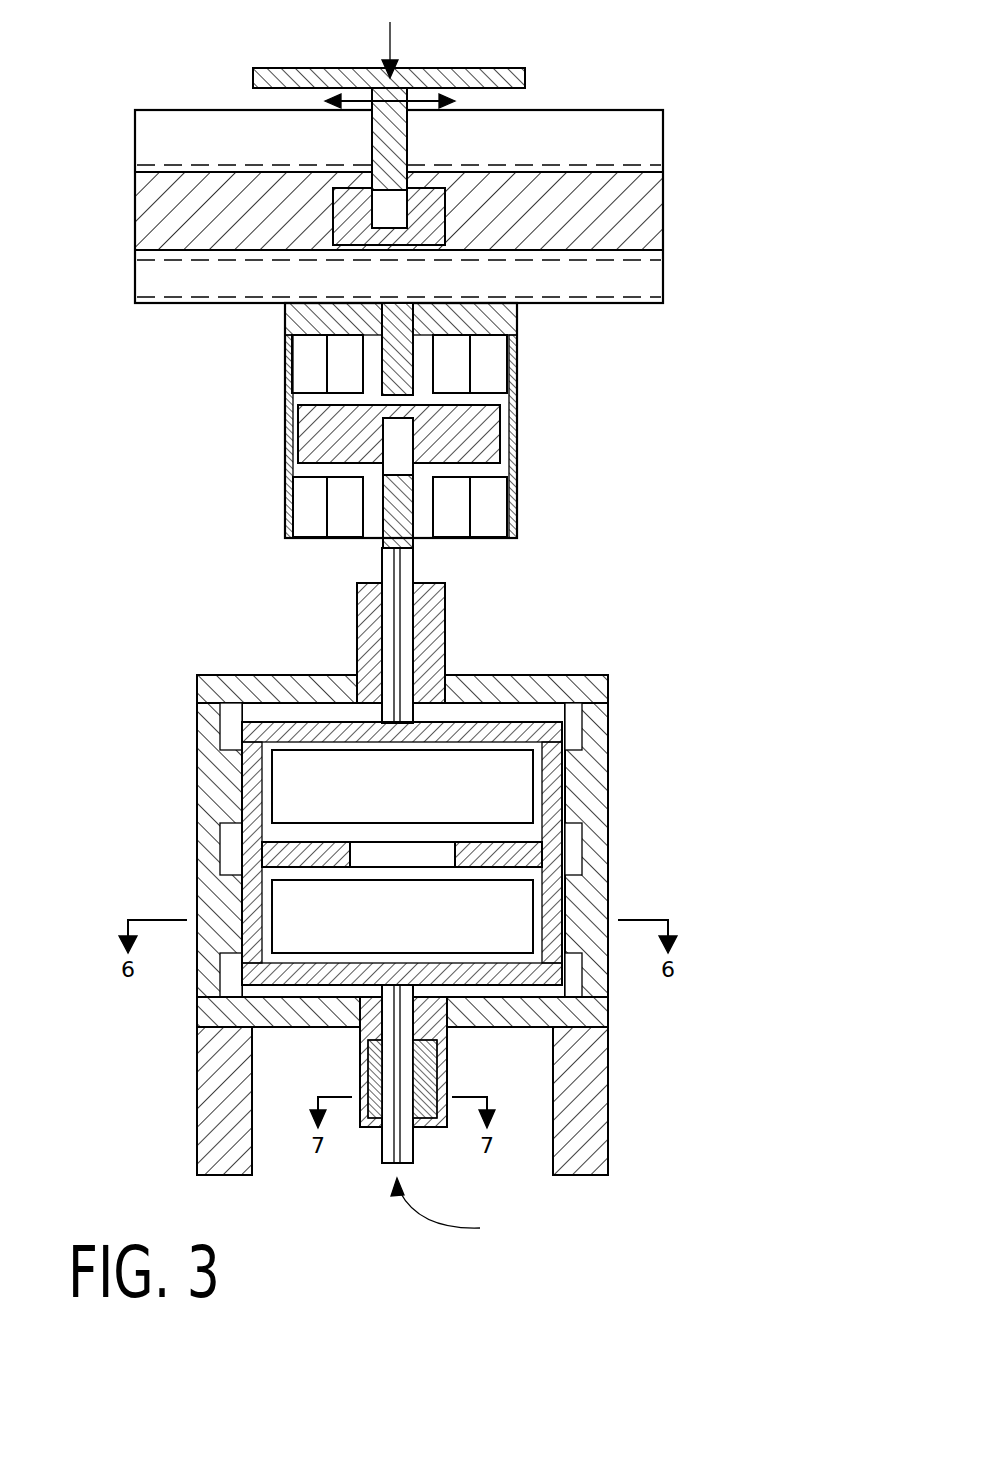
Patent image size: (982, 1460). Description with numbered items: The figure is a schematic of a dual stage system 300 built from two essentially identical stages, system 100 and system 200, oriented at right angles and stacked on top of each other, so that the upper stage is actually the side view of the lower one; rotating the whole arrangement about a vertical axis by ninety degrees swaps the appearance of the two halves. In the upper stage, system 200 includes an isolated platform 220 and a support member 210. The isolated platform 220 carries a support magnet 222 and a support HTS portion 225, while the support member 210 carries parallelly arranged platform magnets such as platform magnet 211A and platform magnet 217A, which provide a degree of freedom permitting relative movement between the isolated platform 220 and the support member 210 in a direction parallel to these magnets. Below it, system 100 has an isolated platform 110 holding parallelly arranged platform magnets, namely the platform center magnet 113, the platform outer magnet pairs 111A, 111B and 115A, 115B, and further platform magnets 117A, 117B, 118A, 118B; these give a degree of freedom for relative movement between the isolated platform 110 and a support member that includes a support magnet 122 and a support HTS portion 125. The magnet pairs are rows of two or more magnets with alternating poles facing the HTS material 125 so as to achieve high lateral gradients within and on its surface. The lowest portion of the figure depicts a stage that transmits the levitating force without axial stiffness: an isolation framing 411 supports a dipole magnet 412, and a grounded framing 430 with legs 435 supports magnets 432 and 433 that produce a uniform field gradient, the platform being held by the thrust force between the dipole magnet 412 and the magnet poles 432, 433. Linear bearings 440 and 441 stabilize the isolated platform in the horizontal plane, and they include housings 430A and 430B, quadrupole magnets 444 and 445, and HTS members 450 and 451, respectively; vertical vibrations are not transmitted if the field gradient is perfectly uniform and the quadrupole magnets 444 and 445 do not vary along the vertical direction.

The dual stage system 300 is at (176, 78).
The system 200 is at (608, 78).
The isolated platform 220 is at (497, 68).
The platform magnet 217A is at (625, 140).
The support member 210 is at (640, 187).
The platform magnet 211A is at (612, 270).
The support magnet 222 is at (392, 205).
The support HTS portion 225 is at (428, 207).
The system 100 is at (598, 411).
The isolated platform 110 is at (518, 315).
The platform center magnet 113 is at (396, 350).
The platform outer magnet 111A is at (318, 357).
The platform outer magnet 111B is at (345, 375).
The platform outer magnet 115A is at (450, 358).
The platform outer magnet 115B is at (487, 372).
The support HTS portion 125 is at (478, 430).
The support magnet 122 is at (400, 440).
The platform magnet 117A is at (310, 495).
The platform magnet 117B is at (350, 510).
The platform magnet 118A is at (450, 500).
The platform magnet 118B is at (485, 512).
The linear bearing 440 is at (312, 628).
The quadrupole magnet 444 is at (415, 568).
The HTS member 450 is at (447, 612).
The grounded framing 430 is at (600, 1006).
The housing 430A is at (432, 690).
The housing 430B is at (448, 1032).
The isolation framing 411 is at (292, 732).
The magnet 432 is at (475, 780).
The dipole magnet 412 is at (430, 855).
The magnet 433 is at (460, 903).
The quadrupole magnet 445 is at (410, 1153).
The HTS member 451 is at (367, 1063).
The legs 435 is at (220, 1107).
The linear bearing 441 is at (465, 1209).